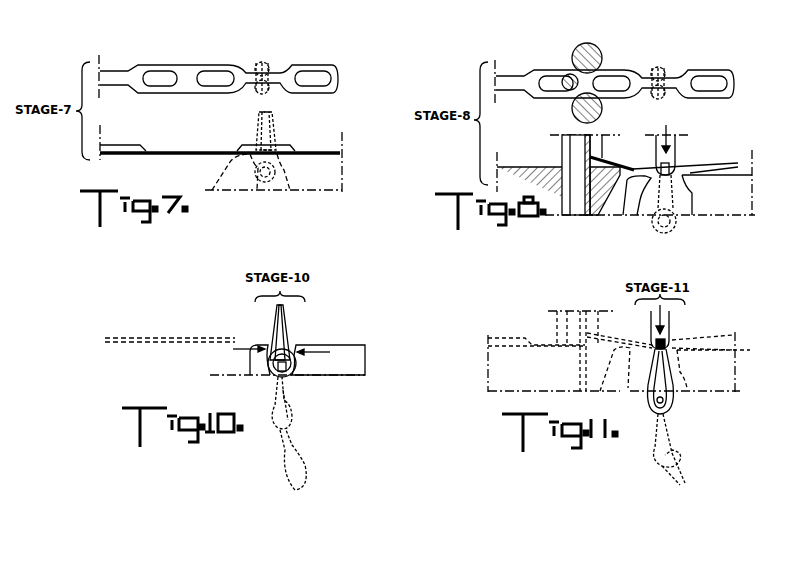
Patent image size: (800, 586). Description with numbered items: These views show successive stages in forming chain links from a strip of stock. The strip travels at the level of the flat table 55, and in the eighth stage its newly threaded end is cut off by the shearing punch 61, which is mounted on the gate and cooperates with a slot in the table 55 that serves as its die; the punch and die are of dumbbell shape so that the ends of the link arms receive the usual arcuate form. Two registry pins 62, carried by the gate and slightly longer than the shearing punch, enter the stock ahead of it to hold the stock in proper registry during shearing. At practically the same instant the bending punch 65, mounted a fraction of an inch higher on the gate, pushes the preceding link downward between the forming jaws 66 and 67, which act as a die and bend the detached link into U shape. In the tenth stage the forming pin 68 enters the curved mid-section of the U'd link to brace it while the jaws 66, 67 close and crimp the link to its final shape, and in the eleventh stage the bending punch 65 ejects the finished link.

In FIG. 8, the flat table 55 is at (577, 177).
In FIG. 8, the shearing punch 61 is at (597, 60).
In FIG. 8, the registry pins 62 is at (565, 92).
In FIG. 8, the bending punch 65 is at (672, 152).
In FIG. 11, the bending punch 65 is at (672, 335).
In FIG. 8, the forming jaw 66 is at (622, 207).
In FIG. 10, the forming jaw 66 is at (245, 366).
In FIG. 8, the forming jaw 67 is at (713, 197).
In FIG. 10, the forming jaw 67 is at (328, 360).
In FIG. 10, the forming pin 68 is at (268, 375).